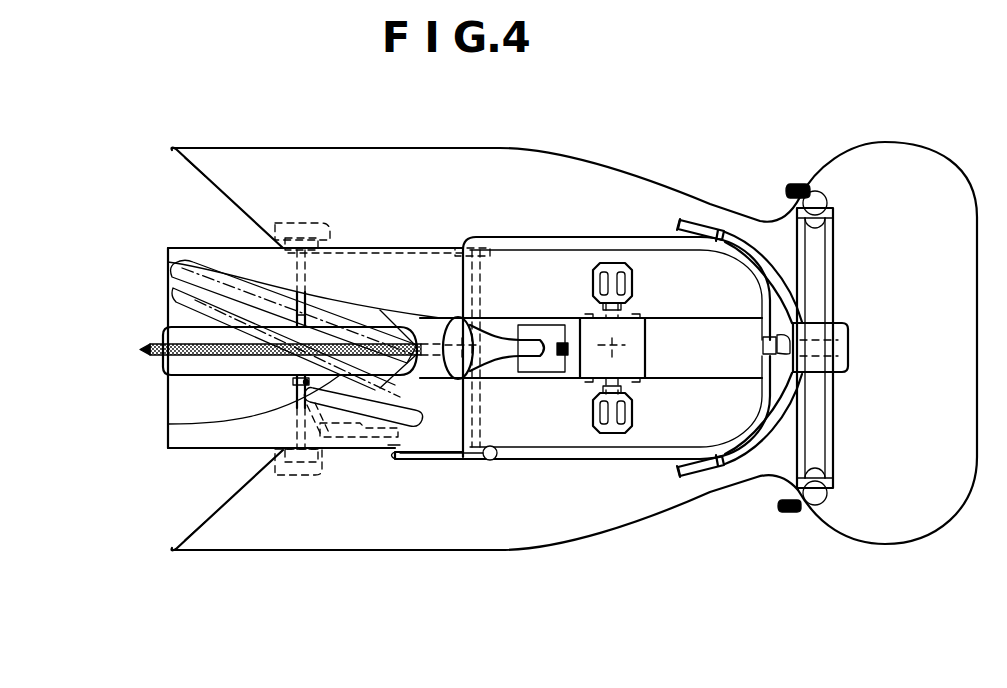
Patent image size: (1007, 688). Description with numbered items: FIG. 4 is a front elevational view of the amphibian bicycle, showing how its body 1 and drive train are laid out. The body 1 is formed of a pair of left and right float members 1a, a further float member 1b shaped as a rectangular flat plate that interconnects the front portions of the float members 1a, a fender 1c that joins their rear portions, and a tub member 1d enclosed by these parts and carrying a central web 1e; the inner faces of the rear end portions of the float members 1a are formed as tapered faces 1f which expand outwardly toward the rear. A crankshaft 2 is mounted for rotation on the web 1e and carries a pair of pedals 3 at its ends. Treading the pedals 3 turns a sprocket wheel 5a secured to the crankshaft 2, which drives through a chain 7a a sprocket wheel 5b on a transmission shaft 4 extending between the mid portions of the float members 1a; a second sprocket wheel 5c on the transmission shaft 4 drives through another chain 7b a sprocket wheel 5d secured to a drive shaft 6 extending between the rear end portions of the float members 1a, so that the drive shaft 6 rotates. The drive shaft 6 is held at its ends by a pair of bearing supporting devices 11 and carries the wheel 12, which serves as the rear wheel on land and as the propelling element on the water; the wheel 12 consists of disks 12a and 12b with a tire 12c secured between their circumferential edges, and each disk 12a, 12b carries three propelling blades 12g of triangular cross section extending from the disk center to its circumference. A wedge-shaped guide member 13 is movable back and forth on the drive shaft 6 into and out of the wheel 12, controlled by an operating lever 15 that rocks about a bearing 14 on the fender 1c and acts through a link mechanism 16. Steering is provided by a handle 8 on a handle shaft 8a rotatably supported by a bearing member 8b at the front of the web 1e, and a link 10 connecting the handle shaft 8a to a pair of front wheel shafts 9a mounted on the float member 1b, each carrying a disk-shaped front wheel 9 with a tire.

The body 1 is at (630, 172).
The float members 1a is at (388, 147).
The float member 1b is at (913, 150).
The fender 1c is at (214, 458).
The tub member 1d is at (566, 258).
The web 1e is at (706, 370).
The tapered faces 1f is at (197, 175).
The crankshaft 2 is at (630, 332).
The pedals 3 is at (612, 266).
The transmission shaft 4 is at (482, 272).
The sprocket wheel 5a is at (598, 356).
The sprocket wheel 5b is at (500, 326).
The sprocket wheel 5c is at (468, 250).
The sprocket wheel 5d is at (286, 226).
The drive shaft 6 is at (282, 296).
The chain 7a is at (528, 372).
The chain 7b is at (398, 252).
The handle 8 is at (740, 456).
The handle shaft 8a is at (792, 350).
The bearing member 8b is at (850, 340).
The front wheel 9 is at (792, 188).
The front wheel shafts 9a is at (815, 207).
The link 10 is at (833, 444).
The bearing supporting devices 11 is at (318, 226).
The wheel 12 is at (150, 358).
The disk 12a is at (200, 375).
The disk 12b is at (192, 305).
The tire 12c is at (150, 349).
The propelling blades 12g is at (188, 296).
The guide member 13 is at (292, 385).
The bearing 14 is at (395, 452).
The operating lever 15 is at (442, 456).
The link mechanism 16 is at (338, 436).